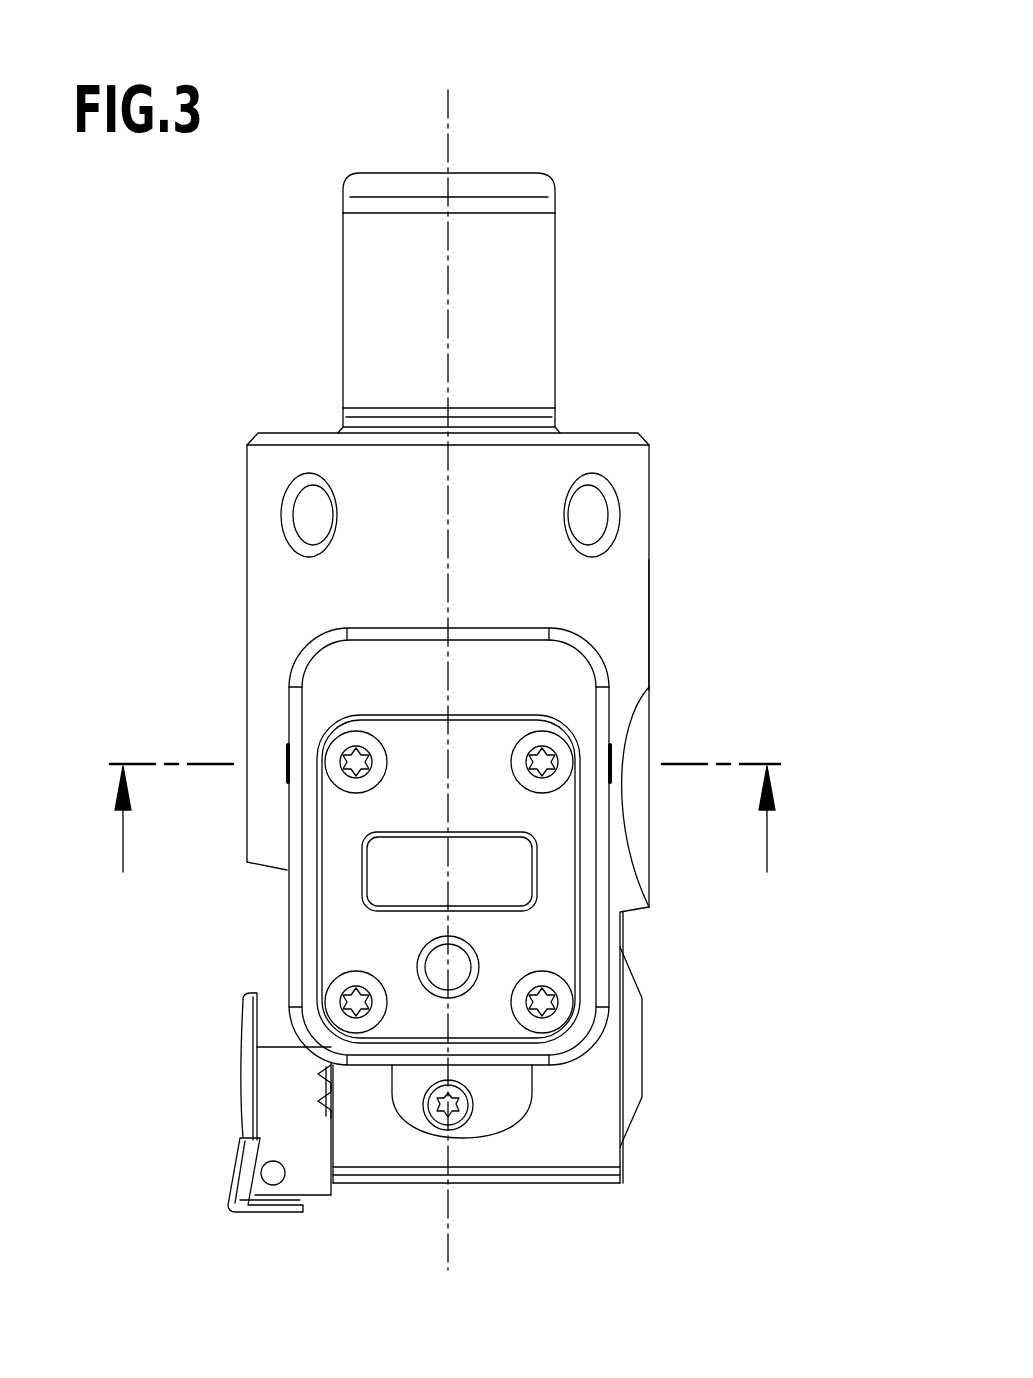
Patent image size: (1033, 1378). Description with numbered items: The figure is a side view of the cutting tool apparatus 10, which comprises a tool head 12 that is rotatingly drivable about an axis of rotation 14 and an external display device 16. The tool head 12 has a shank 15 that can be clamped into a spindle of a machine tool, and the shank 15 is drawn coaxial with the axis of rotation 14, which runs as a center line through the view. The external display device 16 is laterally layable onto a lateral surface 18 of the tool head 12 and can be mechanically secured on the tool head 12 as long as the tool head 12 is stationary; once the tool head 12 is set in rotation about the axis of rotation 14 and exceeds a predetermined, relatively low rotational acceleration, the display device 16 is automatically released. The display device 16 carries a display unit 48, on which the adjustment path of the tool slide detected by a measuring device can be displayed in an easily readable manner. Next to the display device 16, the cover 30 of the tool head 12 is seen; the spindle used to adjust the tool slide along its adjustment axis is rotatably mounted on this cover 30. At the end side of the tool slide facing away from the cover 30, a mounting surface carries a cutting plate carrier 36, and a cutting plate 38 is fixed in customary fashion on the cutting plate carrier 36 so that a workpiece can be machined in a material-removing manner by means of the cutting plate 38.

The cutting tool apparatus 10 is at (618, 165).
The tool head 12 is at (657, 437).
The axis of rotation 14 is at (448, 143).
The shank 15 is at (528, 313).
The external display device 16 is at (289, 898).
The lateral surface 18 is at (650, 603).
The cover 30 is at (630, 1073).
The cutting plate carrier 36 is at (268, 1103).
The cutting plate 38 is at (237, 1212).
The display unit 48 is at (390, 878).